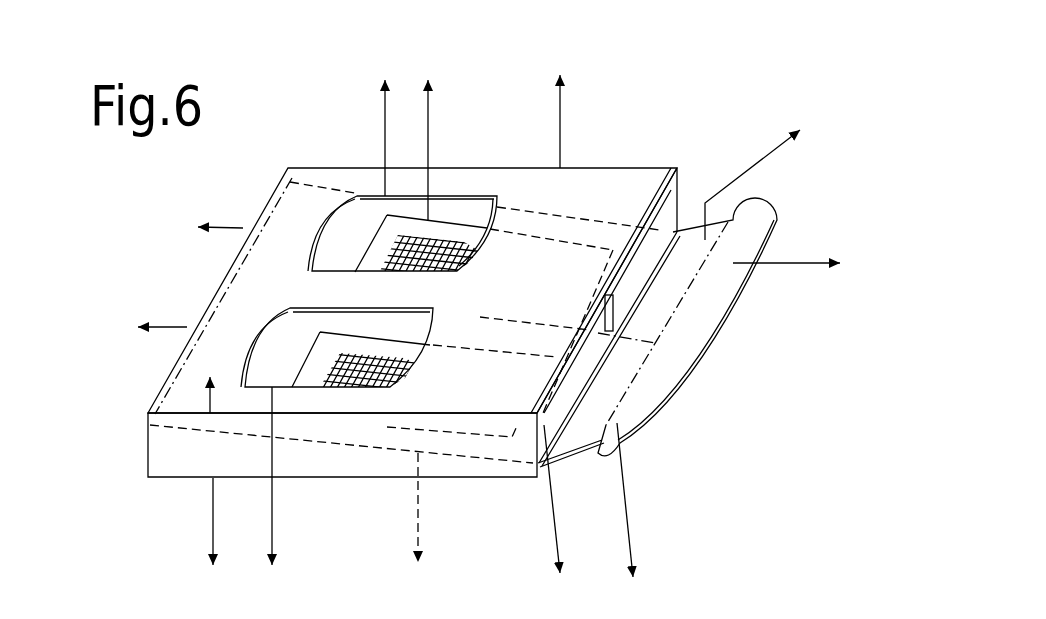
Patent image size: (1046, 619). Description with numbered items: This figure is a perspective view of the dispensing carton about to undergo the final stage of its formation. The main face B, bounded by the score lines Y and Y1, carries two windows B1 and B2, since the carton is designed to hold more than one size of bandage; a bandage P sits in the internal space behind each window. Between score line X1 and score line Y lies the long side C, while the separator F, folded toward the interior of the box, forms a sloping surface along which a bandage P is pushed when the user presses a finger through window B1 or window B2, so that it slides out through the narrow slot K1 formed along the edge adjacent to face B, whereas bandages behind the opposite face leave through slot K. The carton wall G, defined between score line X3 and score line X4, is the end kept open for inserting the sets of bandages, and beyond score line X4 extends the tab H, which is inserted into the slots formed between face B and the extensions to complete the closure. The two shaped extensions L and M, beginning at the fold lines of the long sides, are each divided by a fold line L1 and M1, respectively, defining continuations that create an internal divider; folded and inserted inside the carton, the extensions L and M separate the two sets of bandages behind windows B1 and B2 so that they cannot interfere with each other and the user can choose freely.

The face B is at (277, 302).
The long side C is at (238, 471).
The slot K is at (593, 358).
The slot K1 is at (173, 375).
The shaped extension L is at (660, 230).
The fold line L1 is at (613, 303).
The fold line M1 is at (613, 322).
The window B1 is at (385, 115).
The window B2 is at (282, 502).
The bandage P is at (424, 128).
The score line Y is at (217, 375).
The score line Y1 is at (565, 99).
The carton wall G is at (768, 172).
The tab H is at (807, 265).
The score line X1 is at (226, 548).
The score line X4 is at (639, 521).
The separator F is at (420, 532).
The shaped extension M is at (554, 520).